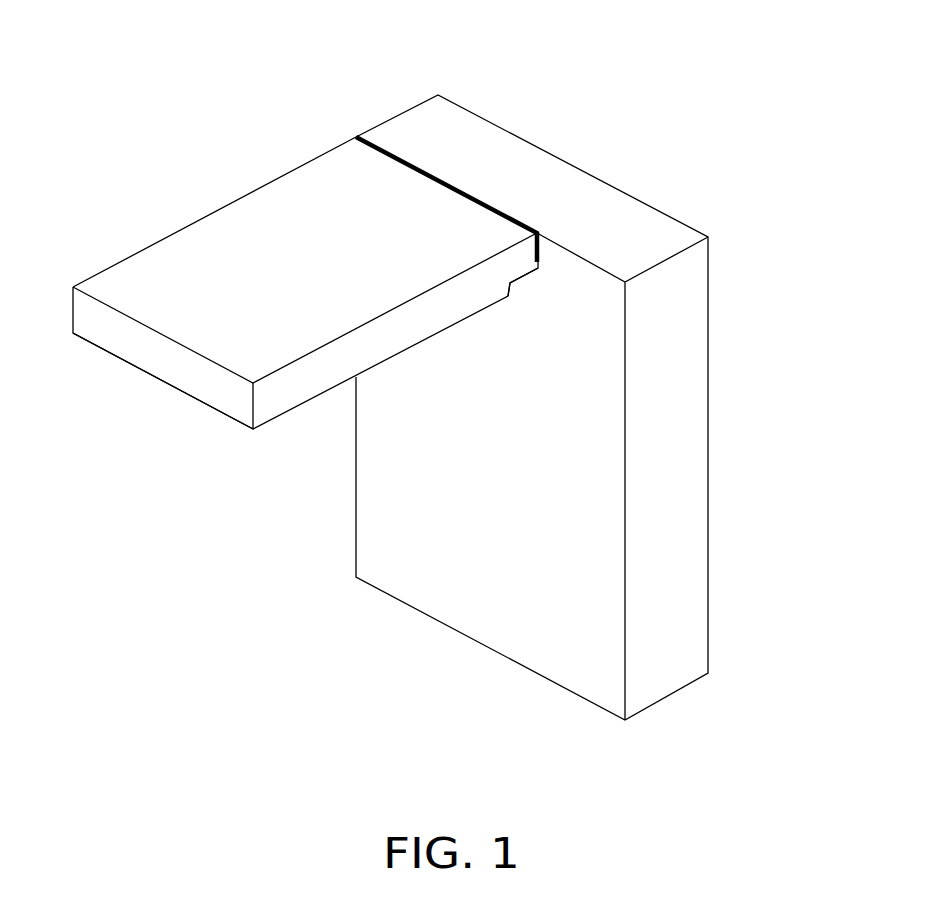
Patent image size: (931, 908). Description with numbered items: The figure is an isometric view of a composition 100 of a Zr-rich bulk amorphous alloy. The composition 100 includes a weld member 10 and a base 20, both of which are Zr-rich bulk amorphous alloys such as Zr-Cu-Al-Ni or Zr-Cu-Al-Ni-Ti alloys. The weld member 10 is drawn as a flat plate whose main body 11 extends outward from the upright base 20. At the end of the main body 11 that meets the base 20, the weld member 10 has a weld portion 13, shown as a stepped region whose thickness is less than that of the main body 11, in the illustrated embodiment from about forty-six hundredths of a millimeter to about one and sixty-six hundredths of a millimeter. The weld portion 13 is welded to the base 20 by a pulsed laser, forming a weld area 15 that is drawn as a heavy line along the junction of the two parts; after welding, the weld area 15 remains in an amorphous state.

The composition 100 is at (345, 68).
The weld member 10 is at (223, 196).
The main body 11 is at (212, 385).
The weld portion 13 is at (521, 262).
The weld area 15 is at (423, 168).
The base 20 is at (673, 378).